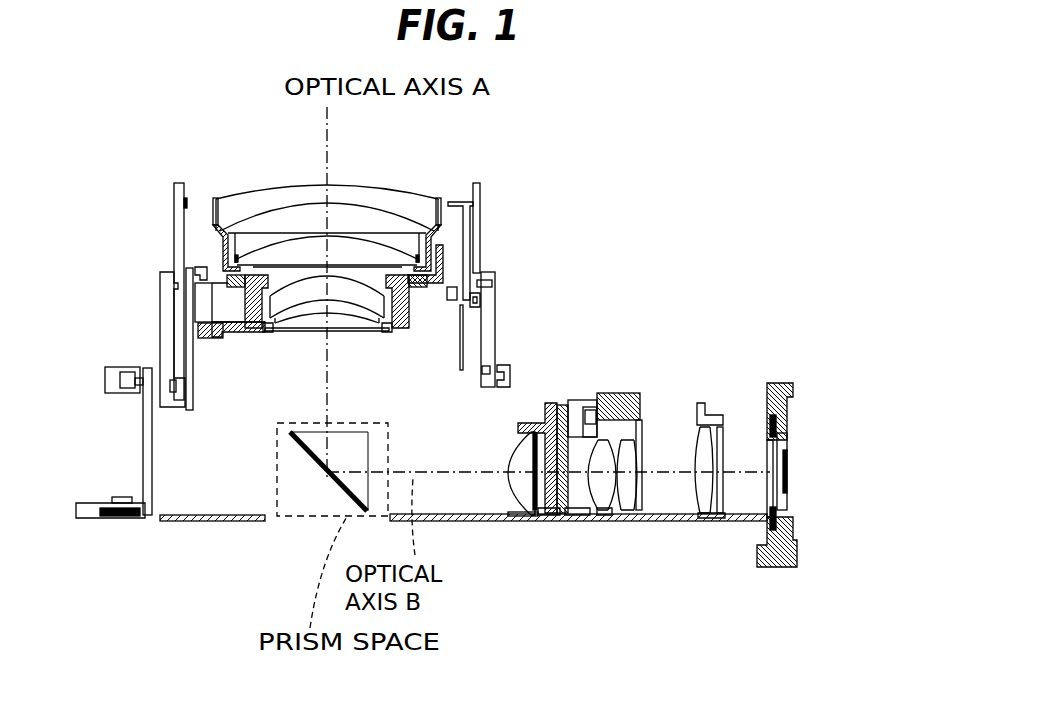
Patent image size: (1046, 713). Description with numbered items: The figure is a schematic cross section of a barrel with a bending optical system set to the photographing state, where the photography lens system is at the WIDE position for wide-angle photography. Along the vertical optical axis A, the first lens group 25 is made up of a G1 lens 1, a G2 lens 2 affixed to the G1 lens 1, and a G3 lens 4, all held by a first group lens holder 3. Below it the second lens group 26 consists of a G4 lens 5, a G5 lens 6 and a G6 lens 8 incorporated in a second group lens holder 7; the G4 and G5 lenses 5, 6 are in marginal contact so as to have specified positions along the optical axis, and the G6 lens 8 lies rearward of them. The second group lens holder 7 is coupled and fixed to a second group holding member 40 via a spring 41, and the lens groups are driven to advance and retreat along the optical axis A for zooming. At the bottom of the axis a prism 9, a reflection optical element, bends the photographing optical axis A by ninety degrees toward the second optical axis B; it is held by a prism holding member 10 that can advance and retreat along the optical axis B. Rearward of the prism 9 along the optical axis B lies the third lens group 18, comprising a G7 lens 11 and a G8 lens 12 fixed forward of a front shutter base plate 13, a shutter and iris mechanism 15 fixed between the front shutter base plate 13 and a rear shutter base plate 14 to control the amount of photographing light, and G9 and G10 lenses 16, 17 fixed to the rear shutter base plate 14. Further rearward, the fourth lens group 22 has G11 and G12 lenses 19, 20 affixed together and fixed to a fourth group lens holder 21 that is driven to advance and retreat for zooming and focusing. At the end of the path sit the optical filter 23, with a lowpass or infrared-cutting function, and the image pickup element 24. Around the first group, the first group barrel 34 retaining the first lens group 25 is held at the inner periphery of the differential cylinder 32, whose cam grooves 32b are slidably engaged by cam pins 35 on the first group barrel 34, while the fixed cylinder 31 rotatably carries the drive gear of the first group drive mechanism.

The G1 lens 1 is at (368, 193).
The G2 lens 2 is at (385, 222).
The first group lens holder 3 is at (214, 213).
The G3 lens 4 is at (383, 252).
The G4 lens 5 is at (298, 297).
The G5 lens 6 is at (320, 323).
The second group lens holder 7 is at (240, 302).
The G6 lens 8 is at (277, 292).
The prism 9 is at (352, 478).
The prism holding member 10 is at (322, 478).
The G7 lens 11 is at (507, 495).
The G8 lens 12 is at (540, 452).
The front shutter base plate 13 is at (520, 425).
The rear shutter base plate 14 is at (565, 520).
The shutter and iris mechanism 15 is at (553, 405).
The G9 lens 16 is at (618, 440).
The G10 lens 17 is at (645, 520).
The third lens group 18 is at (572, 385).
The G11 lens 19 is at (705, 440).
The G12 lens 20 is at (720, 427).
The fourth group lens holder 21 is at (702, 418).
The fourth lens group 22 is at (693, 522).
The optical filter 23 is at (775, 462).
The image pickup element 24 is at (786, 443).
The first lens group 25 is at (488, 182).
The second lens group 26 is at (415, 302).
The fixed cylinder 31 is at (143, 458).
The differential cylinder 32 is at (468, 316).
The cam grooves 32b is at (483, 378).
The first group barrel 34 is at (174, 190).
The cam pins 35 is at (165, 290).
The second group holding member 40 is at (200, 345).
The spring 41 is at (203, 305).